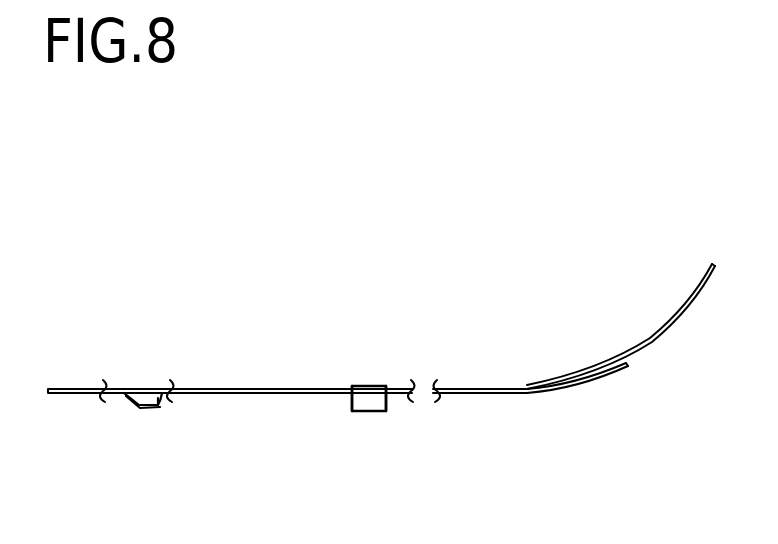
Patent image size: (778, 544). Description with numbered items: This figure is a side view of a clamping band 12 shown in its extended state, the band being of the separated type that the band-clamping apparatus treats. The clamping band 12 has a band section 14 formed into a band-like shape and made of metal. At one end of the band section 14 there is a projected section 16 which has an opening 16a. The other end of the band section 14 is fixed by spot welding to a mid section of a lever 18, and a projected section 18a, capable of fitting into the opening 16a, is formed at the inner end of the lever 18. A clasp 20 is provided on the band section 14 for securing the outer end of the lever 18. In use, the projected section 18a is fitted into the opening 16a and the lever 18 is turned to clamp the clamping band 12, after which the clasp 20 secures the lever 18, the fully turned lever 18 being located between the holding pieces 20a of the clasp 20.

The clamping band 12 is at (255, 360).
The band section 14 is at (206, 390).
The projected section 16 is at (143, 408).
The opening 16a is at (162, 412).
The lever 18 is at (641, 344).
The projected section 18a is at (528, 386).
The clasp 20 is at (365, 386).
The holding pieces 20a is at (370, 413).